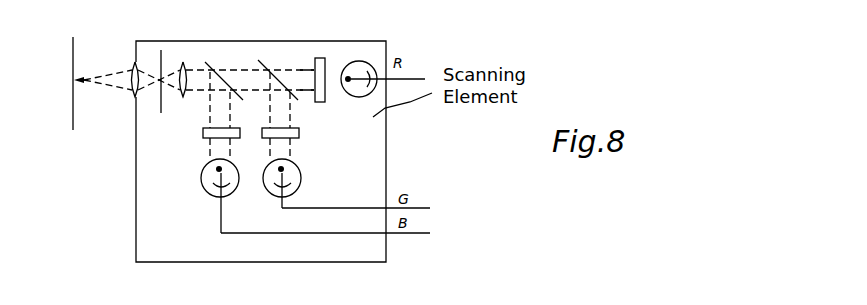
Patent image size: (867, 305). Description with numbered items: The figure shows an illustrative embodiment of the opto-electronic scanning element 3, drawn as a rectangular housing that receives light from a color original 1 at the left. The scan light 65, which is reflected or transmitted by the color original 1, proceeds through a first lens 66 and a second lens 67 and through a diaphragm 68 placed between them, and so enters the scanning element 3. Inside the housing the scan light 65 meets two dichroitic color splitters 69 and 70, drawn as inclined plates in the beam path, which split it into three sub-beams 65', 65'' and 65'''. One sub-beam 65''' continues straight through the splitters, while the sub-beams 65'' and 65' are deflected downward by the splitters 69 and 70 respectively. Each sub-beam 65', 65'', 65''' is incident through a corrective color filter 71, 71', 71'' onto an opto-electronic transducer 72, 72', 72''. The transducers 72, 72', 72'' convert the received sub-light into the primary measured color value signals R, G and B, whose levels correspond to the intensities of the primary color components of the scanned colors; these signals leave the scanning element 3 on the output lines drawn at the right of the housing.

The color original 1 is at (73, 65).
The opto-electronic scanning element 3 is at (136, 242).
The scan light 65 is at (199, 63).
The sub-beam 65' is at (304, 115).
The sub-beam 65'' is at (197, 115).
The sub-beam 65''' is at (315, 47).
The lens 66 is at (135, 62).
The lens 67 is at (183, 63).
The diaphragm 68 is at (162, 62).
The dichroitic color splitter 69 is at (218, 62).
The dichroitic color splitter 70 is at (265, 62).
The corrective color filter 71 is at (334, 53).
The corrective color filter 71' is at (303, 140).
The corrective color filter 71'' is at (198, 149).
The opto-electronic transducer 72 is at (383, 50).
The opto-electronic transducer 72' is at (346, 183).
The opto-electronic transducer 72'' is at (293, 196).